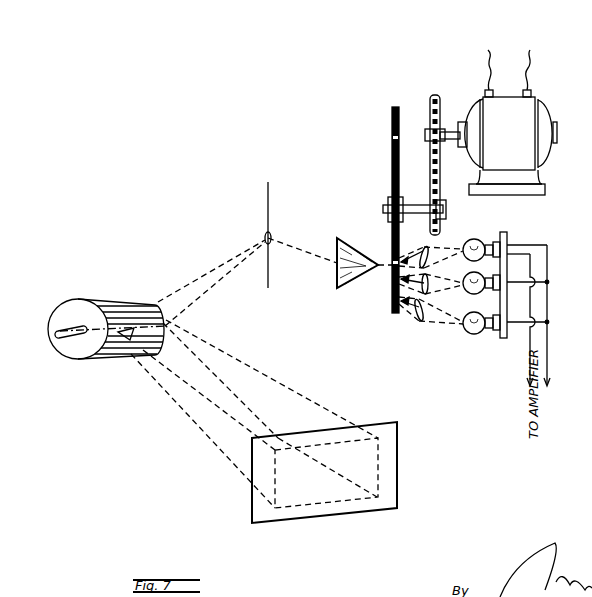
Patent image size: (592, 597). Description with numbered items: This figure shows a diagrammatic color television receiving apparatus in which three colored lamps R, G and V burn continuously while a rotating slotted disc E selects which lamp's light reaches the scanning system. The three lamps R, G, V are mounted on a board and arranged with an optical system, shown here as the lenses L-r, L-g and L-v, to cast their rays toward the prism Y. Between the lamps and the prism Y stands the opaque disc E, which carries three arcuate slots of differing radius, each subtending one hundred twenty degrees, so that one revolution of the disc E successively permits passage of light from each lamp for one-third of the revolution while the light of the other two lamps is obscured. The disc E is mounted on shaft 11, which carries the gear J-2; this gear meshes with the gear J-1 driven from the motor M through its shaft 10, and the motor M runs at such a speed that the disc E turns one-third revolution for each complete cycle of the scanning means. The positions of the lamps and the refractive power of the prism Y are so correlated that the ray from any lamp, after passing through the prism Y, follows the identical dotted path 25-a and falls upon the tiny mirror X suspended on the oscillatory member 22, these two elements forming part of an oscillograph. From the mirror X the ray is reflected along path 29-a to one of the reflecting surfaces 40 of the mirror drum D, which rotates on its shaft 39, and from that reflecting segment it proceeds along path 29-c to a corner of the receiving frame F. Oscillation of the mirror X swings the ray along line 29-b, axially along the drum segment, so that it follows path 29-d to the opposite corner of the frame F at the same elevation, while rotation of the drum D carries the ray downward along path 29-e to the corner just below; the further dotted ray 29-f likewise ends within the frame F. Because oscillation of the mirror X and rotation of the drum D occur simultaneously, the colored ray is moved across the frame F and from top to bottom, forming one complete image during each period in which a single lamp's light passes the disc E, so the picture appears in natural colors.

The mirror drum D is at (84, 352).
The reflecting surfaces 40 is at (142, 316).
The drum shaft 39 is at (68, 341).
The path from mirror X to drum 29-a is at (199, 266).
The line of reflected ray under mirror oscillation 29-b is at (205, 291).
The path from drum to frame corner 29-c is at (236, 426).
The path to opposite frame corner 29-d is at (322, 408).
The path to lower frame corner 29-e is at (198, 430).
The light ray 29-f is at (268, 418).
The receiving frame F is at (392, 430).
The suspension 22 is at (269, 210).
The mirror X is at (266, 236).
The light path 25-a is at (291, 249).
The prism Y is at (337, 247).
The slotted disc E is at (391, 173).
The gear J-1 is at (438, 97).
The gear J-2 is at (442, 223).
The motor shaft 10 is at (429, 133).
The shaft 11 is at (386, 209).
The motor M is at (525, 118).
The lens for violet L-v is at (423, 251).
The lens for green L-g is at (429, 284).
The lens for red L-r is at (421, 314).
The lamp V is at (482, 241).
The lamp G is at (481, 276).
The lamp R is at (481, 316).